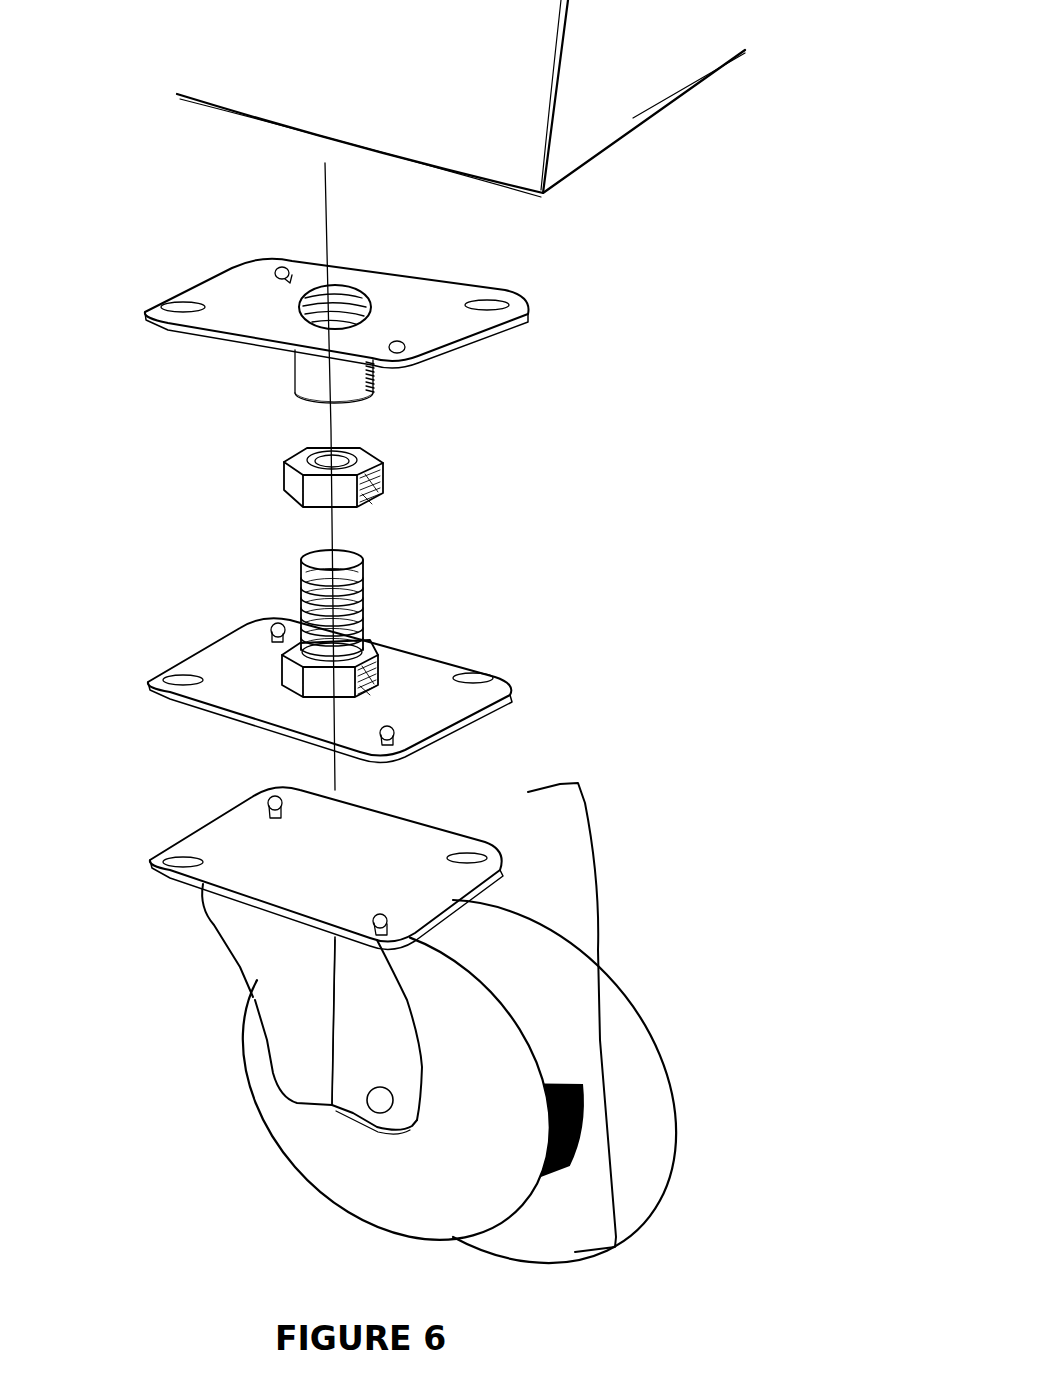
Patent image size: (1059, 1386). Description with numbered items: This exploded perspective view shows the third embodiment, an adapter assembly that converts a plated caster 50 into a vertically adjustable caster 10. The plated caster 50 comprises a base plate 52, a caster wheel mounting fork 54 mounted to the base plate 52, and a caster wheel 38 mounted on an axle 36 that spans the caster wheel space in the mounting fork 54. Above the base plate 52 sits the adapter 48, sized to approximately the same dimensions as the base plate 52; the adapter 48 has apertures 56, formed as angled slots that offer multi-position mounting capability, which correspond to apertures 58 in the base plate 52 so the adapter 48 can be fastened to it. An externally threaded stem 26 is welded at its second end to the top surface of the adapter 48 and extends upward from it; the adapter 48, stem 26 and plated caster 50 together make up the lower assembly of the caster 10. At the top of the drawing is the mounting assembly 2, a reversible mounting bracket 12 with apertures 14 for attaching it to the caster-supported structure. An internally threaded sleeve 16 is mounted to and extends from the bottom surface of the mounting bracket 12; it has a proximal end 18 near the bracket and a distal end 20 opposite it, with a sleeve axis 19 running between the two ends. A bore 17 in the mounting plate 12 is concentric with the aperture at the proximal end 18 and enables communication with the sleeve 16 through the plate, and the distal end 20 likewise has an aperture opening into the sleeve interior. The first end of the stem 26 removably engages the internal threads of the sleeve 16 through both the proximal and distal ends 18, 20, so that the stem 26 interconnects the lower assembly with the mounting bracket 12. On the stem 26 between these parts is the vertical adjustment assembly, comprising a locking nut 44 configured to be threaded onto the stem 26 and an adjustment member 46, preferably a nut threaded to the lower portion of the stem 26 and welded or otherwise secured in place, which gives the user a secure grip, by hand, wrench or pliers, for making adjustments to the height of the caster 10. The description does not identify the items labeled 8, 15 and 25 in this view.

The mounting assembly 2 is at (180, 337).
The frame leg 8 is at (585, 123).
The vertically adjustable caster 10 is at (614, 519).
The reversible mounting bracket 12 is at (337, 313).
The apertures 14 is at (280, 260).
The top surface of mounting plate 15 is at (450, 290).
The internally threaded sleeve 16 is at (380, 377).
The bore 17 is at (350, 297).
The proximal end 18 is at (293, 350).
The sleeve axis 19 is at (327, 221).
The distal end 20 is at (373, 395).
The fork 25 is at (228, 925).
The externally threaded stem 26 is at (352, 548).
The axle 36 is at (390, 1088).
The caster wheel 38 is at (476, 1127).
The locking nut 44 is at (383, 478).
The adjustment member 46 is at (375, 665).
The adapter 48 is at (449, 712).
The plated caster 50 is at (599, 1003).
The base plate 52 is at (329, 876).
The caster wheel mounting fork 54 is at (299, 971).
The apertures 56 is at (282, 620).
The apertures 58 is at (270, 783).